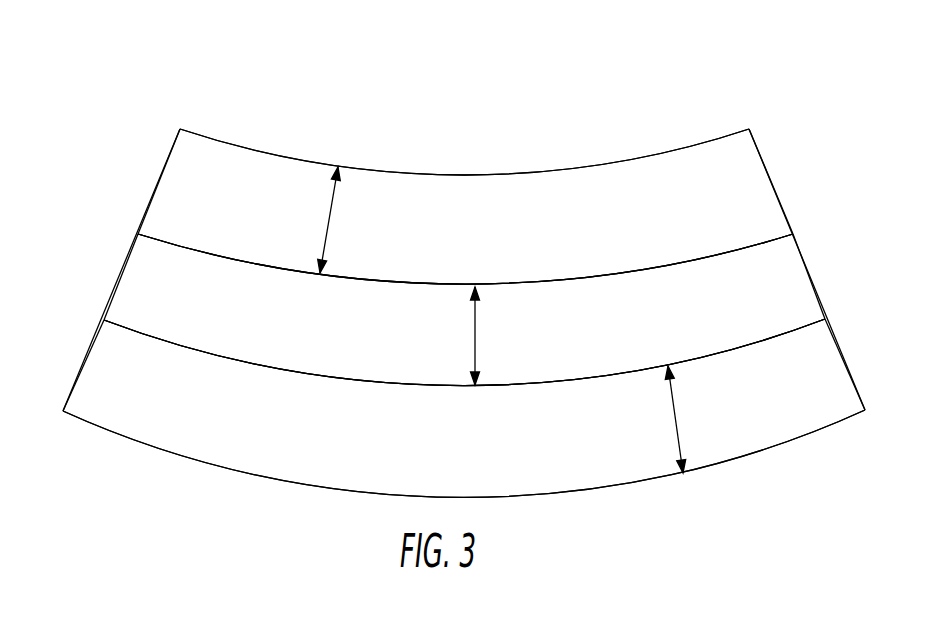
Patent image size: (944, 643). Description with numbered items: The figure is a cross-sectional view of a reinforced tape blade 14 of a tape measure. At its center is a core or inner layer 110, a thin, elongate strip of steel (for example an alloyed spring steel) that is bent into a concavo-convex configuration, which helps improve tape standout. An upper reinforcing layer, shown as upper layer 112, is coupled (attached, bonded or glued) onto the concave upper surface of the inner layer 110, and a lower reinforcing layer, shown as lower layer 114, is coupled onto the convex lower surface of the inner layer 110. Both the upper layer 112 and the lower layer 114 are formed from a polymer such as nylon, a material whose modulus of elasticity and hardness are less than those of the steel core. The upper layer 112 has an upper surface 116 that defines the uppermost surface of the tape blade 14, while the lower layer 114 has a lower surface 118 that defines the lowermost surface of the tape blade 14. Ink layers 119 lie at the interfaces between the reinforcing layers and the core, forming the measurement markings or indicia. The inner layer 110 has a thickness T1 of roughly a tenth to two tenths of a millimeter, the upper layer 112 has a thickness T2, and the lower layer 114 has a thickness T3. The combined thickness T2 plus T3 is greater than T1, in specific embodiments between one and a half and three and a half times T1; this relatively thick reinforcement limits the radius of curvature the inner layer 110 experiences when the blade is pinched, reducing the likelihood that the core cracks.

The tape blade 14 is at (743, 92).
The inner layer 110 is at (138, 272).
The upper layer 112 is at (190, 173).
The lower layer 114 is at (102, 377).
The upper surface 116 is at (267, 150).
The lower surface 118 is at (230, 472).
The ink layers 119 is at (627, 272).
The thickness of inner layer T1 is at (475, 332).
The thickness of upper layer T2 is at (331, 220).
The thickness of lower layer T3 is at (675, 415).